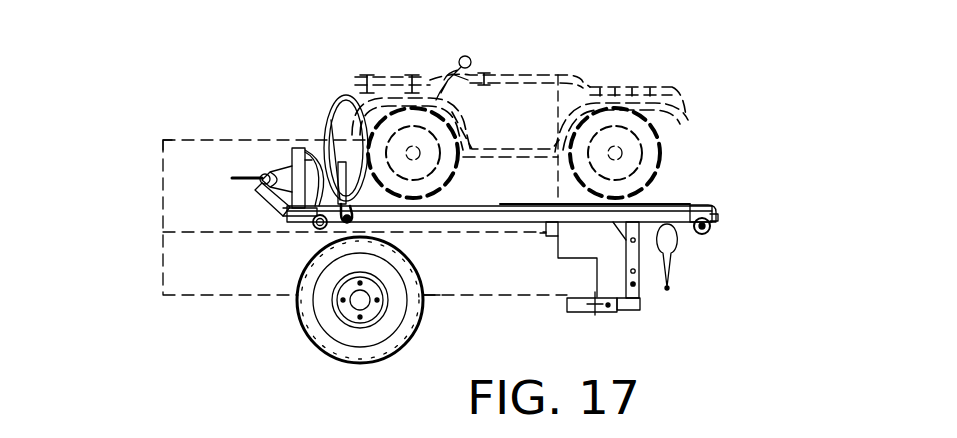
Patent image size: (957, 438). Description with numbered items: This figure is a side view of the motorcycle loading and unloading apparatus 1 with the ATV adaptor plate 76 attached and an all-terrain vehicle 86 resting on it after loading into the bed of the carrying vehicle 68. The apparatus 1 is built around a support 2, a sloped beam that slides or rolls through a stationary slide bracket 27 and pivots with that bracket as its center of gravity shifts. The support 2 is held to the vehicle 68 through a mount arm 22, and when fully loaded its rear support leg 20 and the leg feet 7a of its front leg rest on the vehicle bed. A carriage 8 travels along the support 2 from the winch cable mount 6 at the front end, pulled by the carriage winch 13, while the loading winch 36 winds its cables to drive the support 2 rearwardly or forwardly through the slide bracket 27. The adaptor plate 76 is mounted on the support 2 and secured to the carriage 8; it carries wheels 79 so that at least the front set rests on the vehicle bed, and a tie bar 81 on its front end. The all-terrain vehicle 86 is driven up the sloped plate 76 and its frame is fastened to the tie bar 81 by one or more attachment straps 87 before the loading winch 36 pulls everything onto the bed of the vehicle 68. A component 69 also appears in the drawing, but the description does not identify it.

The motorcycle loading and unloading apparatus 1 is at (272, 126).
The support 2 is at (503, 228).
The winch cable mount 6 is at (266, 193).
The leg feet 7a is at (316, 230).
The carriage 8 is at (272, 153).
The carriage winch 13 is at (210, 179).
The rear support leg 20 is at (553, 240).
The mount arm 22 is at (652, 306).
The slide bracket 27 is at (675, 195).
The loading winch 36 is at (695, 255).
The carrying vehicle 68 is at (222, 128).
The pin 69 is at (592, 318).
The ATV adaptor plate 76 is at (732, 200).
The wheels 79 is at (711, 228).
The tie bar 81 is at (300, 148).
The all-terrain vehicle 86 is at (560, 66).
The attachment straps 87 is at (327, 100).